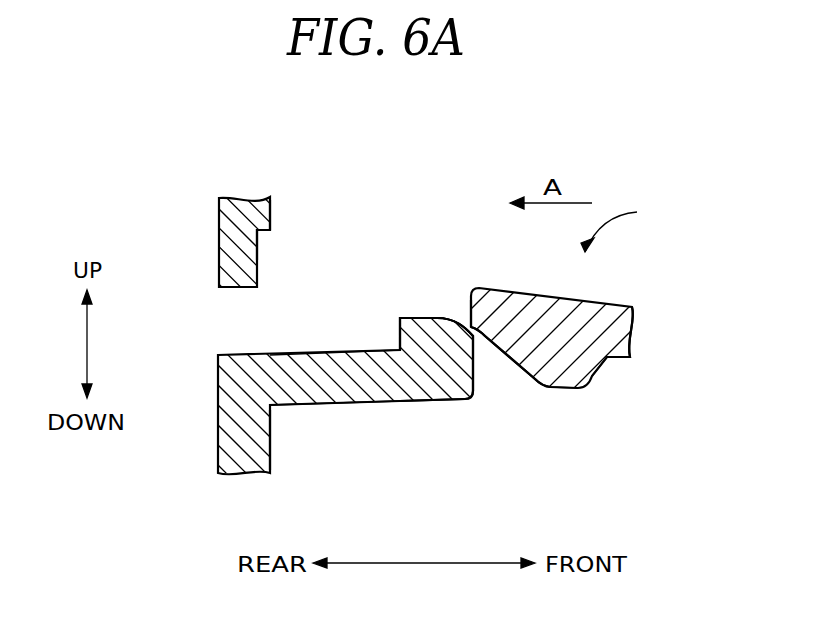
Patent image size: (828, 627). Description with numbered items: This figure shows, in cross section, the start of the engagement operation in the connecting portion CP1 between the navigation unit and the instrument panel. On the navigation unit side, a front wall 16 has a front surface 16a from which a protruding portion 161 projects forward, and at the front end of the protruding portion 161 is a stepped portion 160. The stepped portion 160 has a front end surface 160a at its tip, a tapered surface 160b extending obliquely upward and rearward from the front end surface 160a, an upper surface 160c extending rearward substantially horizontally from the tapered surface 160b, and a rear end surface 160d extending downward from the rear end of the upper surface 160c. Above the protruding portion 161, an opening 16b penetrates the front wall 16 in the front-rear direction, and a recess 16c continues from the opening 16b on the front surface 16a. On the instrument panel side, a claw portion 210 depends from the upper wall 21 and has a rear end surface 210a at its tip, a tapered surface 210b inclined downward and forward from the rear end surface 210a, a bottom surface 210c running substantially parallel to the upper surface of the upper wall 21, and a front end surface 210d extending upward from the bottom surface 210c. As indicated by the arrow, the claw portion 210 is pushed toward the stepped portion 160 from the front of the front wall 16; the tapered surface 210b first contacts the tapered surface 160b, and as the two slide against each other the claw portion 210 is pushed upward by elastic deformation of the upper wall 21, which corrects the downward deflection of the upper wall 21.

The front wall 16 is at (247, 207).
The front surface 16a is at (270, 213).
The opening 16b is at (228, 288).
The recess 16c is at (257, 255).
The protruding portion 161 is at (298, 352).
The stepped portion 160 is at (417, 373).
The front end surface 160a is at (477, 377).
The tapered surface 160b is at (458, 328).
The upper surface 160c is at (417, 317).
The rear end surface 160d is at (398, 333).
The claw portion 210 is at (552, 297).
The rear end surface 210a is at (468, 296).
The tapered surface 210b is at (503, 365).
The bottom surface 210c is at (570, 388).
The front end surface 210d is at (598, 370).
The upper wall 21 is at (628, 305).
The connecting portion CP1 is at (635, 227).